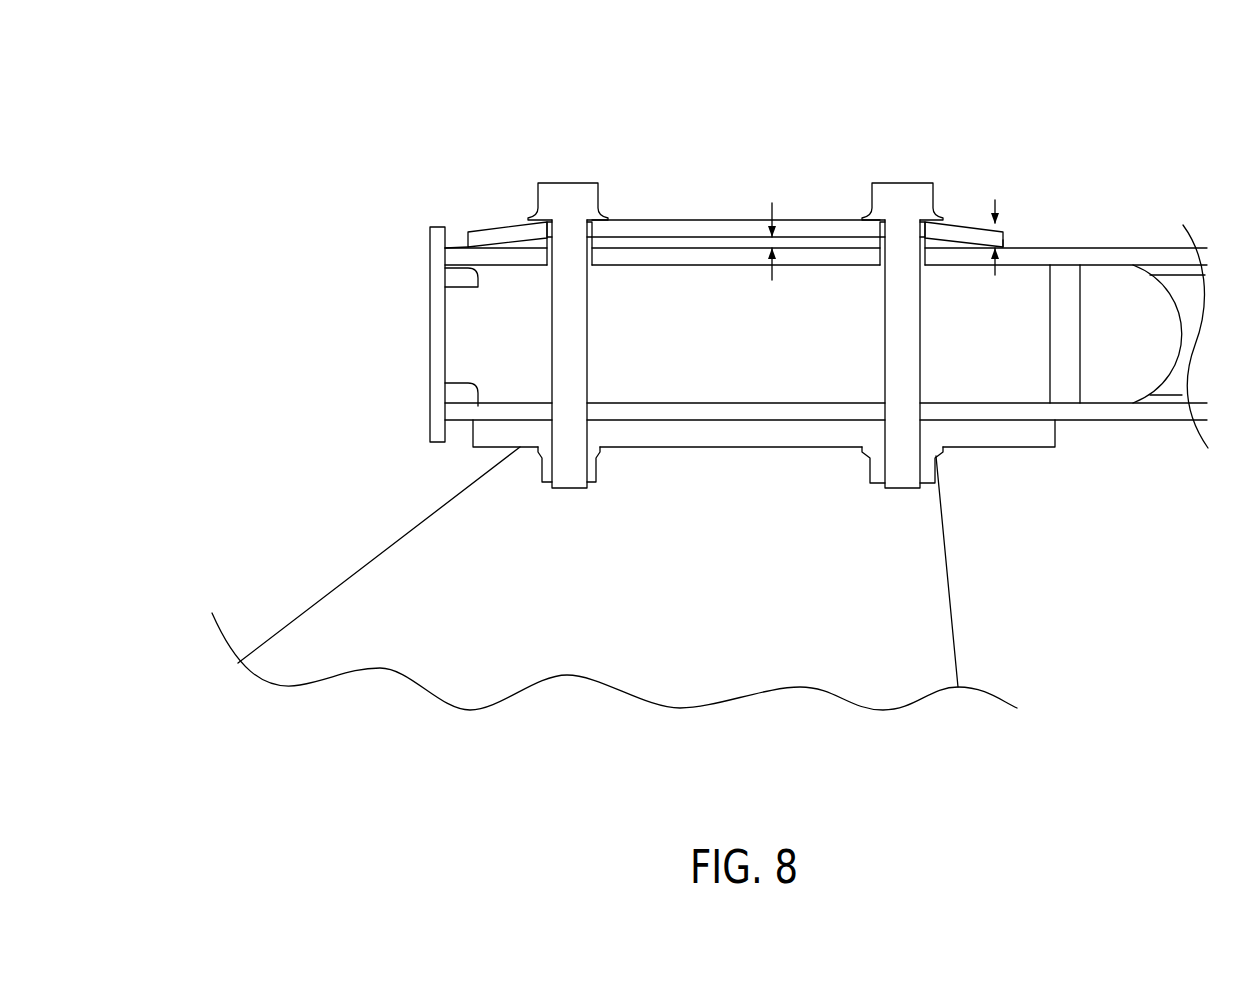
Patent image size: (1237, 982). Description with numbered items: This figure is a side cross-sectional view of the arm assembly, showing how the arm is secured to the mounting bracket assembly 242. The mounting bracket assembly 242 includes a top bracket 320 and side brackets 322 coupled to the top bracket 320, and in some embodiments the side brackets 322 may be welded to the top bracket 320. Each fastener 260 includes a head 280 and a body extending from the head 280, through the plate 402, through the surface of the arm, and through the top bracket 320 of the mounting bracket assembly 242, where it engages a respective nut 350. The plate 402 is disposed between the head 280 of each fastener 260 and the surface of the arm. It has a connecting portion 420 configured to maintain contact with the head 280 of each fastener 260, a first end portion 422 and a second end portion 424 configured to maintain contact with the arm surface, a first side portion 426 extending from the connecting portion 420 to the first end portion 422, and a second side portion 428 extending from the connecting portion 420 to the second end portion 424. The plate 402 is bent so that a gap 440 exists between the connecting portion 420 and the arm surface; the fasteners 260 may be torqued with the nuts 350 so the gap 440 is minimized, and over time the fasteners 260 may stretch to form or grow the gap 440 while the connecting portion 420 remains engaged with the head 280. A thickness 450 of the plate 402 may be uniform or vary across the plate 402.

The mounting bracket assembly 242 is at (591, 578).
The fasteners 260 is at (754, 292).
The head 280 is at (568, 183).
The top bracket 320 is at (485, 448).
The side brackets 322 is at (955, 623).
The nut 350 is at (537, 470).
The plate 402 is at (716, 111).
The connecting portion 420 is at (737, 217).
The first end portion 422 is at (1003, 240).
The second end portion 424 is at (467, 247).
The first side portion 426 is at (965, 223).
The second side portion 428 is at (517, 232).
The gap 440 is at (772, 272).
The thickness 450 is at (995, 275).